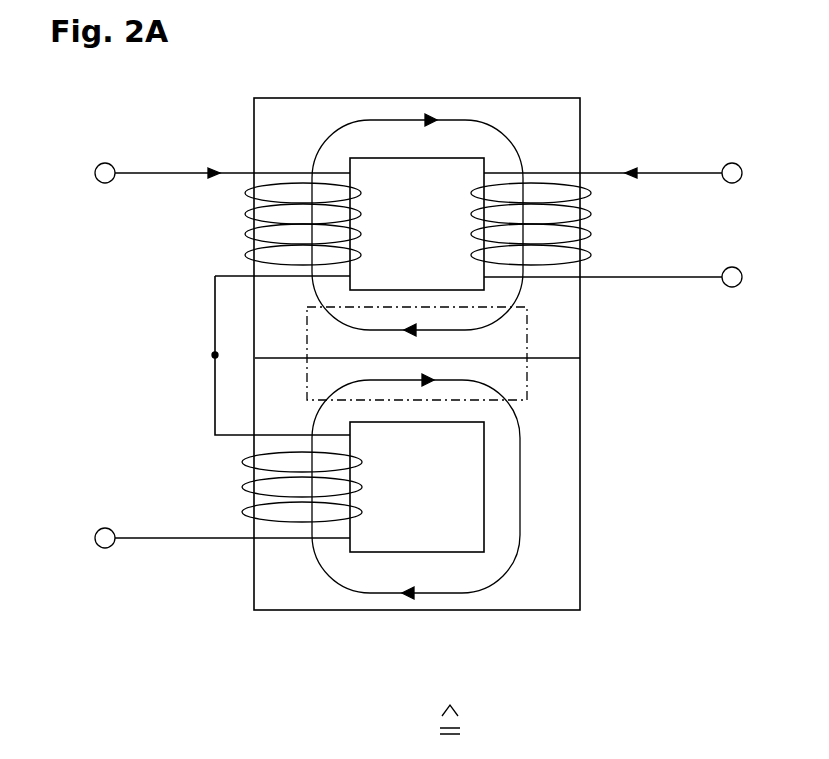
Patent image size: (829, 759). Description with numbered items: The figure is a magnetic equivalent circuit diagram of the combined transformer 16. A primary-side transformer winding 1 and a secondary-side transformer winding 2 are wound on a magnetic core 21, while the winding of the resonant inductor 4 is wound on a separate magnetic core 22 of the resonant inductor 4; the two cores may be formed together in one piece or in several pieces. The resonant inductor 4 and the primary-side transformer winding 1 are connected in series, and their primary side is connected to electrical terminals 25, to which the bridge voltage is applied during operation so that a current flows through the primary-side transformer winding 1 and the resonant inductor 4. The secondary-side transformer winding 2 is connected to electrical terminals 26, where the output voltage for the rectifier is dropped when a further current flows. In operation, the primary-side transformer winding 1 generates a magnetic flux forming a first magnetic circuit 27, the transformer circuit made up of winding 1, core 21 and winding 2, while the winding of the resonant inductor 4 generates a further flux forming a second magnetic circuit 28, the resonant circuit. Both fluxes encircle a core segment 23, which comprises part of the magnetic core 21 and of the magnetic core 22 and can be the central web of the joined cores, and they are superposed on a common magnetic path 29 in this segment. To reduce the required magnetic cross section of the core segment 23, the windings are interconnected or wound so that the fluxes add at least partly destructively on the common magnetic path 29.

The primary-side transformer winding 1 is at (245, 218).
The secondary-side transformer winding 2 is at (592, 218).
The resonant inductor 4 is at (242, 488).
The combined transformer 16 is at (532, 93).
The magnetic core 21 is at (470, 108).
The magnetic core of the resonant inductor 22 is at (560, 530).
The core segment 23 is at (590, 302).
The electrical terminals 25 is at (105, 183).
The electrical terminals 26 is at (731, 184).
The first magnetic circuit 27 is at (338, 132).
The second magnetic circuit 28 is at (481, 594).
The common magnetic path 29 is at (511, 347).